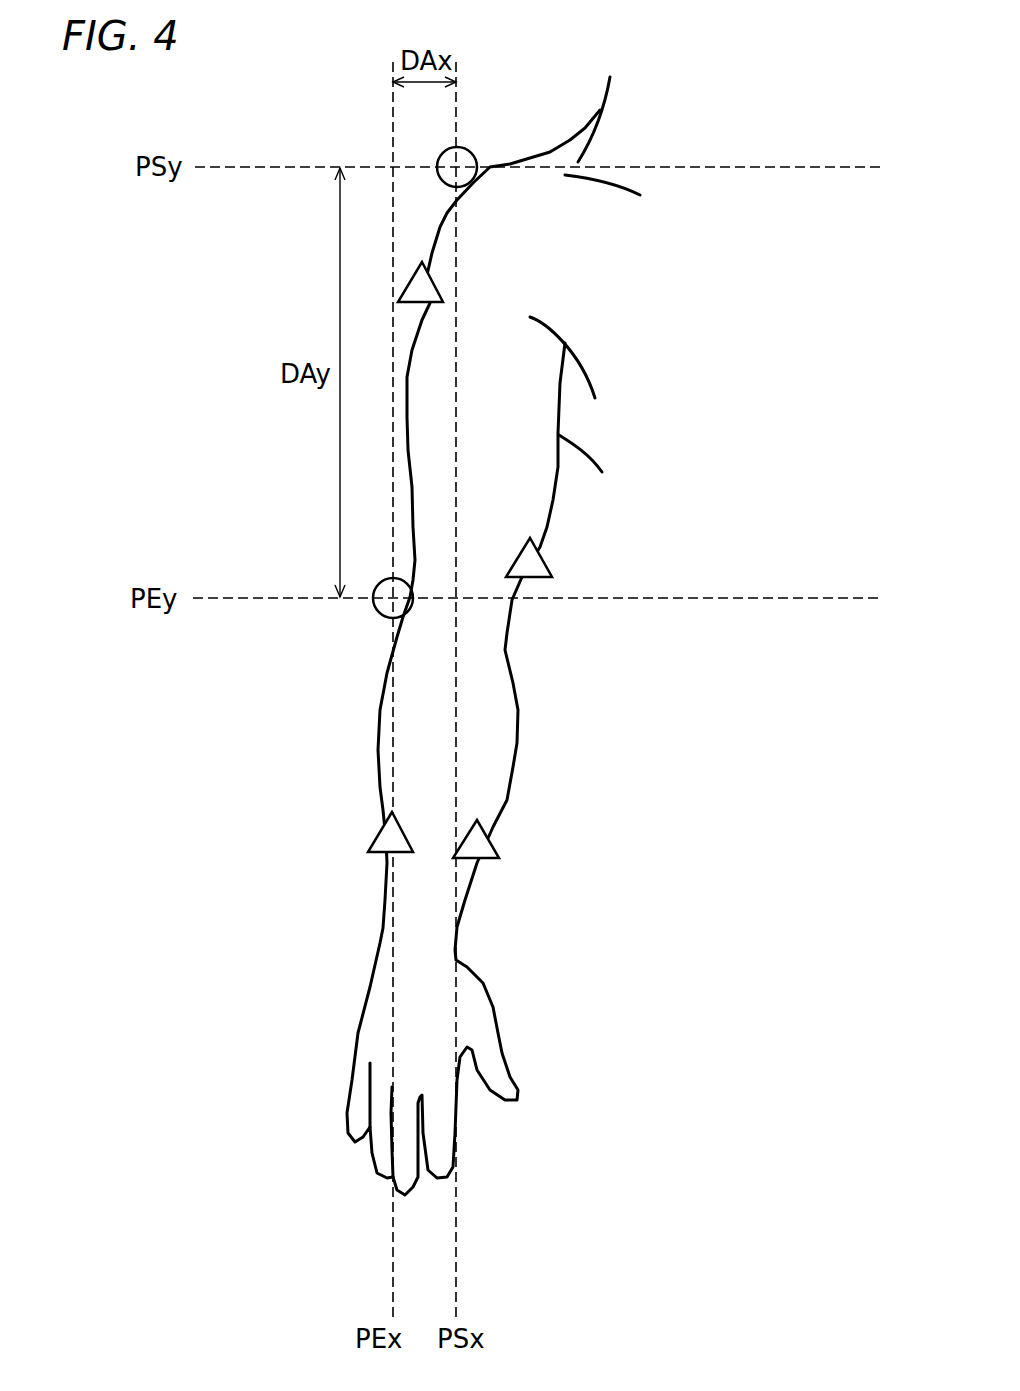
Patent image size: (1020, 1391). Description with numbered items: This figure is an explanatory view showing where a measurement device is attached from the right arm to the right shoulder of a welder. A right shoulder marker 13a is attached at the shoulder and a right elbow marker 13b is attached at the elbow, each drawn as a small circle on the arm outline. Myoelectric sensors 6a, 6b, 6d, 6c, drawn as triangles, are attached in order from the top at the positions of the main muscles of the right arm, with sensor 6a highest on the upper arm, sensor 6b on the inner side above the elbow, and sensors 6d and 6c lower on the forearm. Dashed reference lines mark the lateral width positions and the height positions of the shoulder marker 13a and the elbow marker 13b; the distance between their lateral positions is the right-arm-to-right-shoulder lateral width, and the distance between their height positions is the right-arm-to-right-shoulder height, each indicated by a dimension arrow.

The right shoulder marker 13a is at (471, 153).
The right elbow marker 13b is at (382, 615).
The myoelectric sensor 6a is at (433, 278).
The myoelectric sensor 6b is at (544, 561).
The myoelectric sensor 6c is at (492, 845).
The myoelectric sensor 6d is at (378, 836).